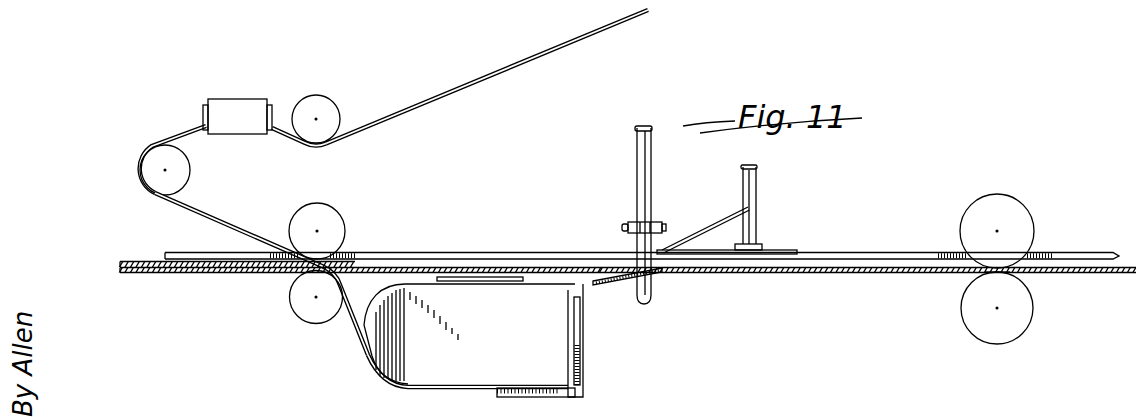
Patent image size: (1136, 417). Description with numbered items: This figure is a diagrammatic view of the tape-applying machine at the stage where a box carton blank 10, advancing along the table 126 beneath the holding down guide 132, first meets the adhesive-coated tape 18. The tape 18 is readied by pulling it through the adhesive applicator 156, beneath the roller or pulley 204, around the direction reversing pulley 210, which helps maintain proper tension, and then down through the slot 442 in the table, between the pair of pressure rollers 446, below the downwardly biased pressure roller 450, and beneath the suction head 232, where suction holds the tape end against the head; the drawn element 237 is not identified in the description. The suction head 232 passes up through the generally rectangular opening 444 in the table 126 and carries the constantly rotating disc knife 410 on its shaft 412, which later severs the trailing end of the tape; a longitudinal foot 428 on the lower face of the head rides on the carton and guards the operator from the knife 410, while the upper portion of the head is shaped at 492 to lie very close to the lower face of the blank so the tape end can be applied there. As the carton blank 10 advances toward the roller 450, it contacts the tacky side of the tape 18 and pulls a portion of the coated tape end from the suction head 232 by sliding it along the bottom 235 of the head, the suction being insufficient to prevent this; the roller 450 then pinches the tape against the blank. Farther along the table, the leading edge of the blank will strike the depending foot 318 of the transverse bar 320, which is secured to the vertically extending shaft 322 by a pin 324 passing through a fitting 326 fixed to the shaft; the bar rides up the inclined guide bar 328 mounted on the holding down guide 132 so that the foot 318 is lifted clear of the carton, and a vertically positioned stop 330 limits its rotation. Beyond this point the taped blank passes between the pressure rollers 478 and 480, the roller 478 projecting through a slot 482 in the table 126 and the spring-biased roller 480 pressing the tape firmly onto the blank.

The box carton blank 10 is at (142, 262).
The tape 18 is at (448, 91).
The table 126 is at (842, 279).
The holding down guide 132 is at (898, 258).
The adhesive applicator 156 is at (248, 96).
The roller or pulley 204 is at (318, 105).
The direction reversing pulley 210 is at (162, 169).
The suction head 232 is at (506, 342).
The bottom of suction head 235 is at (462, 388).
The belt 237 is at (356, 321).
The depending foot 318 is at (636, 235).
The transverse bar 320 is at (647, 210).
The vertically extending shaft 322 is at (636, 192).
The pin 324 is at (688, 238).
The fitting 326 is at (666, 224).
The guide bar 328 is at (693, 238).
The stop 330 is at (755, 222).
The disc knife 410 is at (583, 330).
The shaft 412 is at (575, 352).
The foot 428 is at (556, 360).
The slot 442 is at (263, 276).
The rectangular opening 444 is at (463, 272).
The pressure rollers 446 is at (303, 307).
The pressure roller 450 is at (323, 216).
The pressure roller 478 is at (1020, 318).
The pressure roller 480 is at (1017, 237).
The slot 482 is at (1008, 277).
The shaped upper portion of suction head 492 is at (500, 278).